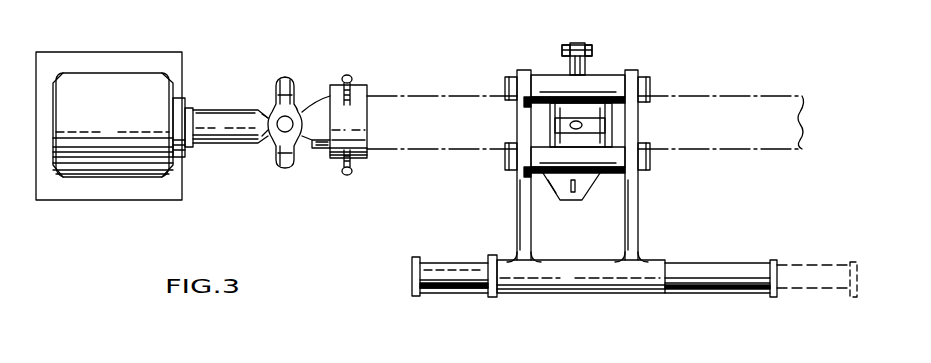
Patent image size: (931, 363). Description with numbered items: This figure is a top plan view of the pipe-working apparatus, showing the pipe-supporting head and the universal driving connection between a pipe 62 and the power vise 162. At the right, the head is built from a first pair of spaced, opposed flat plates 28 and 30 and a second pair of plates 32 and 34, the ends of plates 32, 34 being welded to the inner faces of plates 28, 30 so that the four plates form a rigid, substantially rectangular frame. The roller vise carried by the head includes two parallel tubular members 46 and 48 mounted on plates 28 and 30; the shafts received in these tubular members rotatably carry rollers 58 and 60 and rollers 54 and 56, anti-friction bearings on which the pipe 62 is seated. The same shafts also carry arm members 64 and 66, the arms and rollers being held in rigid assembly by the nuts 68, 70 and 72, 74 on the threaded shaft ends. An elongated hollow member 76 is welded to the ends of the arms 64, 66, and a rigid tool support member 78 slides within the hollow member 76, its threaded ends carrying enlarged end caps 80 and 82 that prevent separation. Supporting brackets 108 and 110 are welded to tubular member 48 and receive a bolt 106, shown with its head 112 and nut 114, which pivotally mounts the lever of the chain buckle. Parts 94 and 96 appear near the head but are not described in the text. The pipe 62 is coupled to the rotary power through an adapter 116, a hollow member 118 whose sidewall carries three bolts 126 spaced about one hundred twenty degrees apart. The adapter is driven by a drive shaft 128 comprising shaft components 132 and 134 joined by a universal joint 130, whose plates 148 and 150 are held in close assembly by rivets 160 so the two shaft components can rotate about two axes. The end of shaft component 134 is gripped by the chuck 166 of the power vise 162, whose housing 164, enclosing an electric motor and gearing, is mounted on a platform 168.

The power vise 162 is at (107, 46).
The housing 164 is at (93, 152).
The platform 168 is at (127, 192).
The chuck 166 is at (191, 150).
The drive shaft 128 is at (224, 100).
The shaft component 134 is at (226, 130).
The plate 150 is at (285, 176).
The universal joint 130 is at (275, 60).
The plate 148 is at (293, 85).
The rivets 160 is at (274, 93).
The shaft component 132 is at (322, 142).
The adapter 116 is at (336, 62).
The hollow member 118 is at (362, 138).
The bolts 126 is at (350, 78).
The pipe 62 is at (422, 82).
The roller 54 is at (530, 70).
The roller 56 is at (639, 73).
The arm member 64 is at (516, 210).
The arm member 66 is at (633, 242).
The nut 72 is at (506, 88).
The nut 74 is at (651, 90).
The nut 68 is at (505, 158).
The nut 70 is at (652, 162).
The tubular member 48 is at (627, 60).
The roller 60 is at (625, 180).
The roller 58 is at (530, 178).
The supporting bracket 108 is at (567, 72).
The bolt 106 is at (577, 42).
The head 112 is at (563, 46).
The nut 114 is at (590, 48).
The supporting bracket 110 is at (596, 82).
The plate 28 is at (548, 130).
The plate 32 is at (548, 118).
The plate 30 is at (614, 122).
The plate 34 is at (614, 137).
The tubular member 46 is at (600, 176).
The bracket arm 94 is at (562, 200).
The pin 96 is at (580, 203).
The hollow member 76 is at (556, 282).
The end cap 80 is at (413, 270).
The tool support member 78 is at (705, 282).
The end cap 82 is at (775, 298).